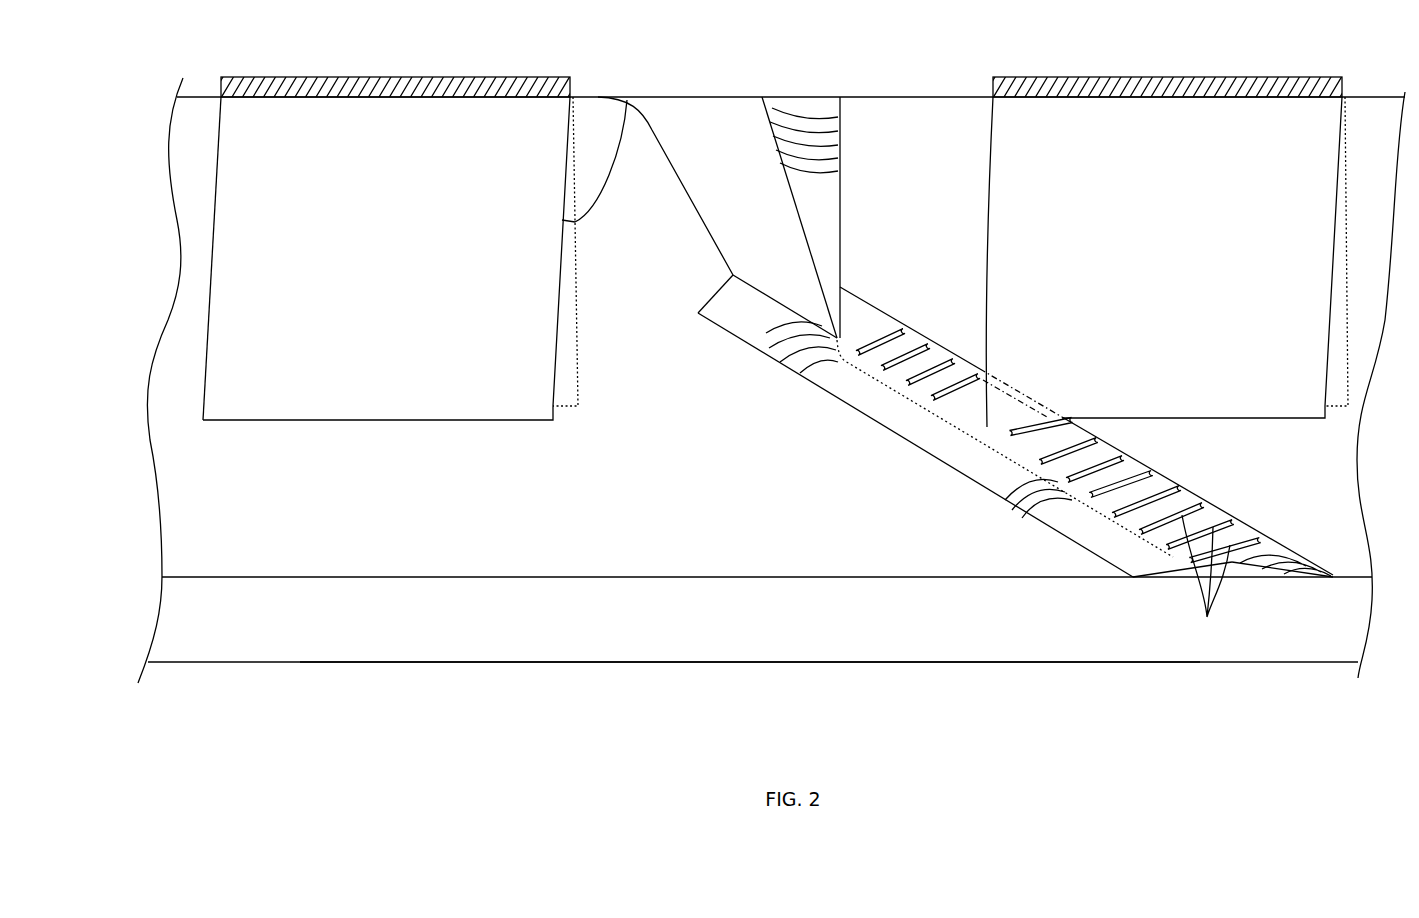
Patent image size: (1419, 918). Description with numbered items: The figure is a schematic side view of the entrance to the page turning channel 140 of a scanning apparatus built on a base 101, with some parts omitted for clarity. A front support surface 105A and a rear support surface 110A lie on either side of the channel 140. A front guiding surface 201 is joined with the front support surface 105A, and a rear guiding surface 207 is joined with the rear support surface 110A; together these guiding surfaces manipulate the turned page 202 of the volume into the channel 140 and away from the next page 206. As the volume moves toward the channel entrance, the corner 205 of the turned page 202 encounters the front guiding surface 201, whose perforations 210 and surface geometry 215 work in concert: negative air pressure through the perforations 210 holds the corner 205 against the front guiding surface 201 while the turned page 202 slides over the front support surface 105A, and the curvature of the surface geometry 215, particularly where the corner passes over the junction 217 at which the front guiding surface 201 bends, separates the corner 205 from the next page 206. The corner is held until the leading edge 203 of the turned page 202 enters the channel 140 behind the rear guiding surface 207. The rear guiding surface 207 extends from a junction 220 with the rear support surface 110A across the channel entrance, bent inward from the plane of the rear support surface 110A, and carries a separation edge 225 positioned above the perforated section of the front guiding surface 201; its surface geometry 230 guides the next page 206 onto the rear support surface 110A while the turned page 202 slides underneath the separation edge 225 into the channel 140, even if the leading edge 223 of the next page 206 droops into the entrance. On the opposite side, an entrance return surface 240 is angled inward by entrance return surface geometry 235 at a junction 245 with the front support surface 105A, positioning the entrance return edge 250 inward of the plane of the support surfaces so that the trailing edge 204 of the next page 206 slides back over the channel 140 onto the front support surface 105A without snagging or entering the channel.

The base 101 is at (638, 622).
The rear support surface 110A is at (445, 528).
The front support surface 105A is at (1325, 485).
The page turning channel 140 is at (700, 183).
The front guiding surface 201 is at (1272, 547).
The turned page 202 is at (1173, 247).
The leading edge of the turned page 203 is at (987, 212).
The trailing edge of the next page 204 is at (626, 98).
The corner of the turned page 205 is at (1005, 417).
The next page 206 is at (397, 248).
The rear guiding surface 207 is at (1140, 575).
The perforations 210 is at (1203, 583).
The surface geometry of the front guiding surface 215 is at (1287, 568).
The junction where the front guiding surface bends 217 is at (1175, 480).
The junction with the rear support surface 220 is at (867, 414).
The leading edge of the next page 223 is at (212, 163).
The separation edge 225 is at (767, 298).
The surface geometry of the rear guiding surface 230 is at (1020, 490).
The entrance return surface geometry 235 is at (823, 118).
The entrance return surface 240 is at (823, 228).
The junction with the front support surface 245 is at (841, 125).
The entrance return edge 250 is at (716, 246).